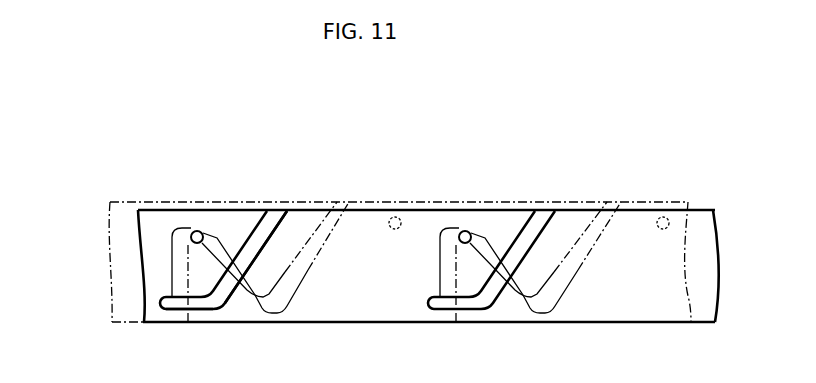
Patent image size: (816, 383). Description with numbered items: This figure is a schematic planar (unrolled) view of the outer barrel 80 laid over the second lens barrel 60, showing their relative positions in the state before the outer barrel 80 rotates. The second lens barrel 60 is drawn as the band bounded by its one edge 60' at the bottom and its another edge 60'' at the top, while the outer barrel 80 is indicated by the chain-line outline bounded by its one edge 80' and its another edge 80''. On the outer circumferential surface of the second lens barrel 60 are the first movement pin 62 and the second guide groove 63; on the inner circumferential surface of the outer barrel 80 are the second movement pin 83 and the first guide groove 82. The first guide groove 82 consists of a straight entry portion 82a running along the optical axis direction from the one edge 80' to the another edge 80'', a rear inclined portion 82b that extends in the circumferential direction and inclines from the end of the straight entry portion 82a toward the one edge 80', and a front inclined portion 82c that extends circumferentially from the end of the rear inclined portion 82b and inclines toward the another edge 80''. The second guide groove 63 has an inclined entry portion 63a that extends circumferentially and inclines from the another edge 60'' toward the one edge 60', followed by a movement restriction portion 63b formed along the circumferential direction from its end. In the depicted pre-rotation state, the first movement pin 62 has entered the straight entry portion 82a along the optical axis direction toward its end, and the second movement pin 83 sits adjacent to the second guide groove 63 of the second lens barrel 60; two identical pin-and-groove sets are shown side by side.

The second lens barrel 60 is at (428, 202).
The one edge of the second lens barrel 60' is at (429, 348).
The another edge of the second lens barrel 60'' is at (261, 212).
The outer barrel 80 is at (400, 202).
The one edge of the outer barrel 80' is at (122, 348).
The another edge of the outer barrel 80'' is at (95, 211).
The first movement pin 62 is at (191, 233).
The second guide groove 63 is at (257, 211).
The inclined entry portion 63a is at (236, 299).
The movement restriction portion 63b is at (198, 304).
The first guide groove 82 is at (316, 220).
The straight entry portion 82a is at (178, 262).
The rear inclined portion 82b is at (222, 255).
The front inclined portion 82c is at (302, 267).
The second movement pin 83 is at (400, 216).